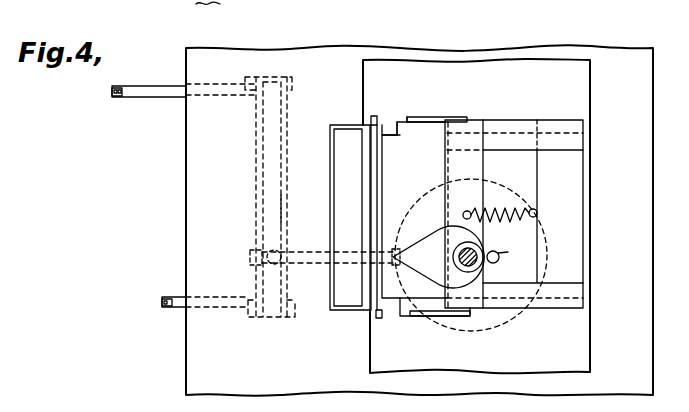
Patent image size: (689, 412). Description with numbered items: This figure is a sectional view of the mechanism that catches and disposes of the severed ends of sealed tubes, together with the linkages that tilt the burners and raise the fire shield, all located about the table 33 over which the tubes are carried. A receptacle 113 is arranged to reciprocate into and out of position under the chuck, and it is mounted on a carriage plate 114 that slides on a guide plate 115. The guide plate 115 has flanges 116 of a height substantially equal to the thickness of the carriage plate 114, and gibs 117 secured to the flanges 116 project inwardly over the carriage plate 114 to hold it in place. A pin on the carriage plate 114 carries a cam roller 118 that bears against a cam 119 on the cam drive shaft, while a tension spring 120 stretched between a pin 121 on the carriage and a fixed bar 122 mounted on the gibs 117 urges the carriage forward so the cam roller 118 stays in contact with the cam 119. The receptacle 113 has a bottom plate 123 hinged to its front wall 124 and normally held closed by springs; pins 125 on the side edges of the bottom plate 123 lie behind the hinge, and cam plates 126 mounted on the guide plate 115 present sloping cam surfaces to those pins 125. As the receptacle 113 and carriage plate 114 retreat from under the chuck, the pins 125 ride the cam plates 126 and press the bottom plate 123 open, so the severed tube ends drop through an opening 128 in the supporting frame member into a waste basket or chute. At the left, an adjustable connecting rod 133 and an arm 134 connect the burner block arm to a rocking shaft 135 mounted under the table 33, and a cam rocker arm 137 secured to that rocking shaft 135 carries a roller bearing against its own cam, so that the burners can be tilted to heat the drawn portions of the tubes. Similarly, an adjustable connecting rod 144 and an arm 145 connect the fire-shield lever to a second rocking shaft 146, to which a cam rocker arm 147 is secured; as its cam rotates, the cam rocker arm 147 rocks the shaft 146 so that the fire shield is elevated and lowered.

The table 33 is at (186, 210).
The receptacle 113 is at (382, 175).
The carriage plate 114 is at (388, 135).
The guide plate 115 is at (570, 200).
The flanges 116 is at (559, 133).
The gibs 117 is at (510, 138).
The cam roller 118 is at (508, 261).
The cam 119 is at (440, 232).
The tension spring 120 is at (506, 208).
The pin 121 is at (537, 208).
The fixed bar 122 is at (447, 160).
The bottom plate 123 is at (368, 300).
The front wall 124 is at (345, 285).
The pins 125 is at (370, 118).
The cam plates 126 is at (442, 117).
The opening 128 is at (404, 117).
The adjustable connecting rod 133 is at (162, 300).
The arm 134 is at (178, 306).
The rocking shaft 135 is at (285, 214).
The cam rocker arm 137 is at (280, 250).
The adjustable connecting rod 144 is at (112, 94).
The arm 145 is at (152, 98).
The rocking shaft 146 is at (256, 157).
The cam rocker arm 147 is at (250, 254).